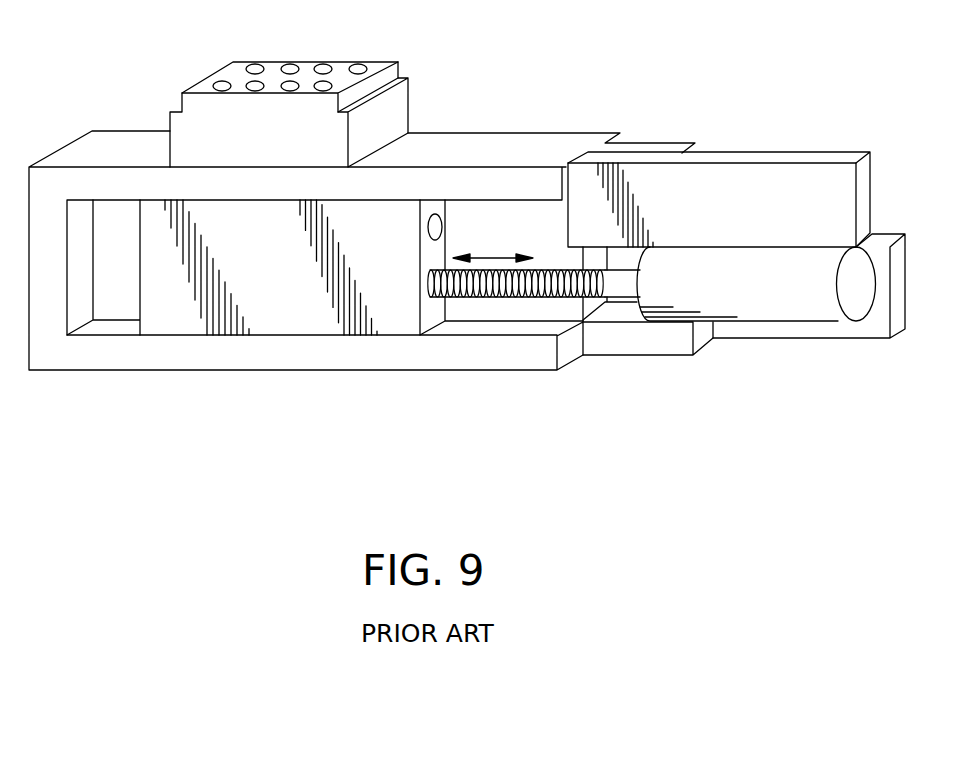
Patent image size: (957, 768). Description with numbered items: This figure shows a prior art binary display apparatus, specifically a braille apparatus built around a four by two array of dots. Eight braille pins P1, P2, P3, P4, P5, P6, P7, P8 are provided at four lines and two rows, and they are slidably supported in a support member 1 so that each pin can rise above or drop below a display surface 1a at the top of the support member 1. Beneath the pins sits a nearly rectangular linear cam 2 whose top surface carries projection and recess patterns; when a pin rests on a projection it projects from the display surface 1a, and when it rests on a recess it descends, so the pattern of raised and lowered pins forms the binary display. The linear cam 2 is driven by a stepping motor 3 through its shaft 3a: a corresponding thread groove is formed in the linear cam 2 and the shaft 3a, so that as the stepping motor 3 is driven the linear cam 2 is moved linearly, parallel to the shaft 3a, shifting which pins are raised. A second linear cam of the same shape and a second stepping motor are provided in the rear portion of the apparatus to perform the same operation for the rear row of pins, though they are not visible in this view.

The support member 1 is at (178, 142).
The display surface 1a is at (238, 63).
The braille pin P1 is at (222, 86).
The braille pin P2 is at (255, 86).
The braille pin P3 is at (290, 86).
The braille pin P4 is at (323, 86).
The braille pin P5 is at (255, 69).
The braille pin P6 is at (290, 69).
The braille pin P7 is at (323, 69).
The braille pin P8 is at (358, 69).
The linear cam 2 is at (282, 327).
The stepping motor 3 is at (753, 313).
The shaft 3a is at (615, 290).